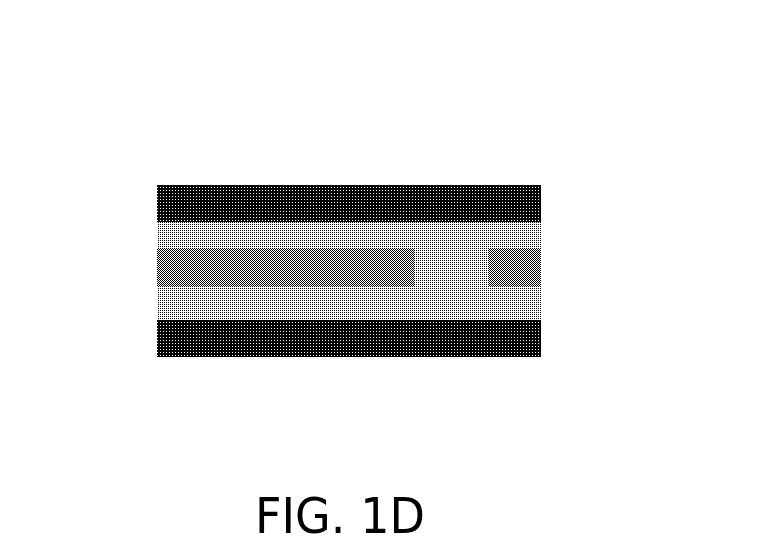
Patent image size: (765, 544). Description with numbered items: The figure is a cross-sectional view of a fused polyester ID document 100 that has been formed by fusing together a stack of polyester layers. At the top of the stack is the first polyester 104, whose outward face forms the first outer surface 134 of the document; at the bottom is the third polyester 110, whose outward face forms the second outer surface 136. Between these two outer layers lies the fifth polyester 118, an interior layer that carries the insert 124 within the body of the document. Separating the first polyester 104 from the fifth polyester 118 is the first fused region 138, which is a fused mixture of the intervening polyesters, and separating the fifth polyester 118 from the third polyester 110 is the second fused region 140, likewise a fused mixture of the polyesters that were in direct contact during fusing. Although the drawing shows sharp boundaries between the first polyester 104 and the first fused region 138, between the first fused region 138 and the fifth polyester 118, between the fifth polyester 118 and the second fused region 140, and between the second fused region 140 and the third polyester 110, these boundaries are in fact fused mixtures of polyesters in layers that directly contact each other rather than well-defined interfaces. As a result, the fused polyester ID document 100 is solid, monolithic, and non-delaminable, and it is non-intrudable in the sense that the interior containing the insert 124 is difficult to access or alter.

The fused polyester ID document 100 is at (340, 260).
The first polyester 104 is at (318, 173).
The third polyester 110 is at (313, 369).
The fifth polyester 118 is at (157, 266).
The insert 124 is at (474, 280).
The first outer surface 134 is at (357, 185).
The second outer surface 136 is at (424, 358).
The first fused region 138 is at (157, 233).
The second fused region 140 is at (157, 300).